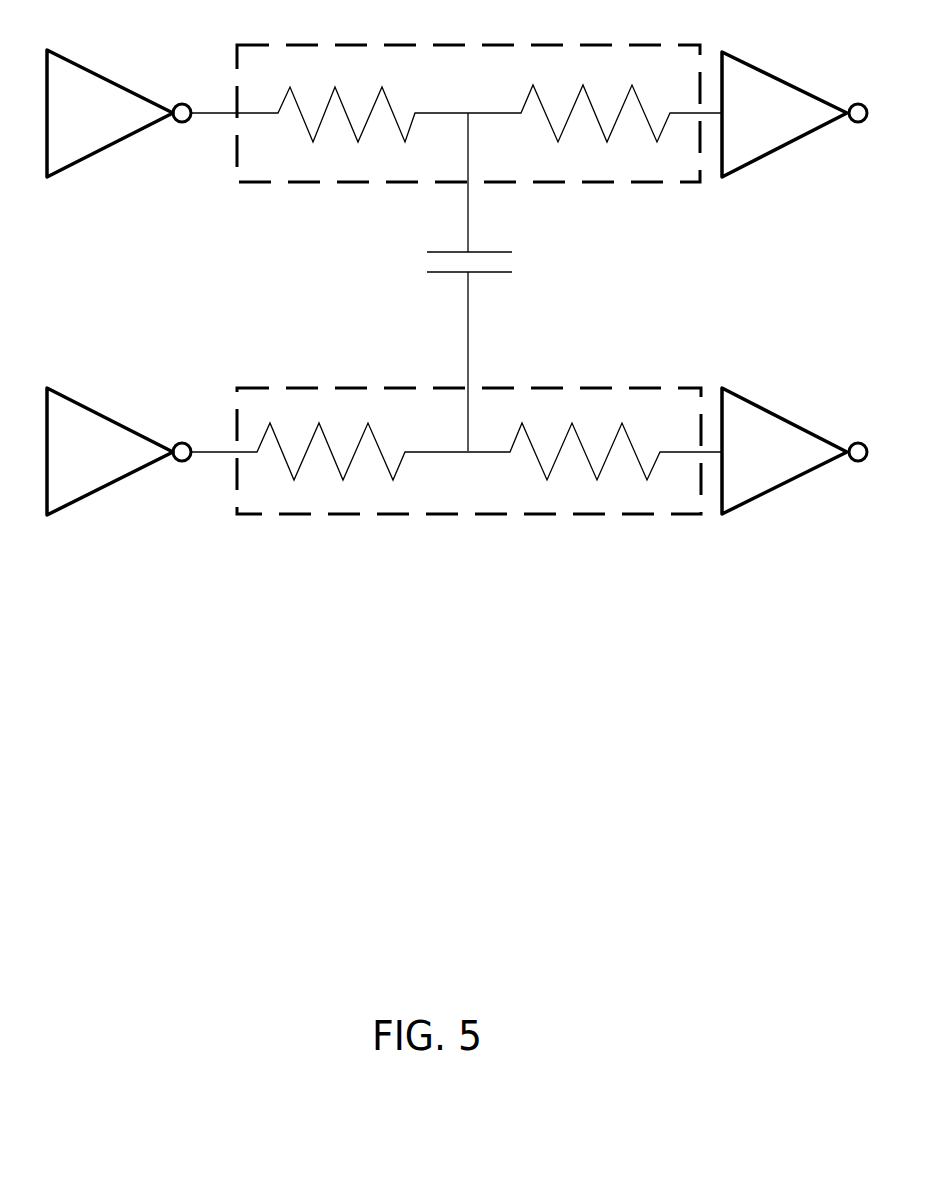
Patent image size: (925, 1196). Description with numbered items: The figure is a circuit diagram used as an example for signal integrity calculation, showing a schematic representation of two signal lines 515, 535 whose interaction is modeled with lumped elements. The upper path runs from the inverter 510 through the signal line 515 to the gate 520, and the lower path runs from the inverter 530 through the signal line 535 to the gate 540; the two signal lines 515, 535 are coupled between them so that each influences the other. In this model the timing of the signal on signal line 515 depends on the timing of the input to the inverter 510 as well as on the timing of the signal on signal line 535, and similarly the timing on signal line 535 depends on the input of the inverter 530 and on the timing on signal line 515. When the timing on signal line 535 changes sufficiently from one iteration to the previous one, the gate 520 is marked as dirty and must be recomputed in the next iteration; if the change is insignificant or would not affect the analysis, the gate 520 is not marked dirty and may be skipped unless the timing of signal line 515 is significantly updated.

The inverter 510 is at (88, 65).
The signal line 515 is at (595, 47).
The gate 520 is at (763, 65).
The inverter 530 is at (88, 403).
The signal line 535 is at (595, 388).
The gate 540 is at (765, 403).